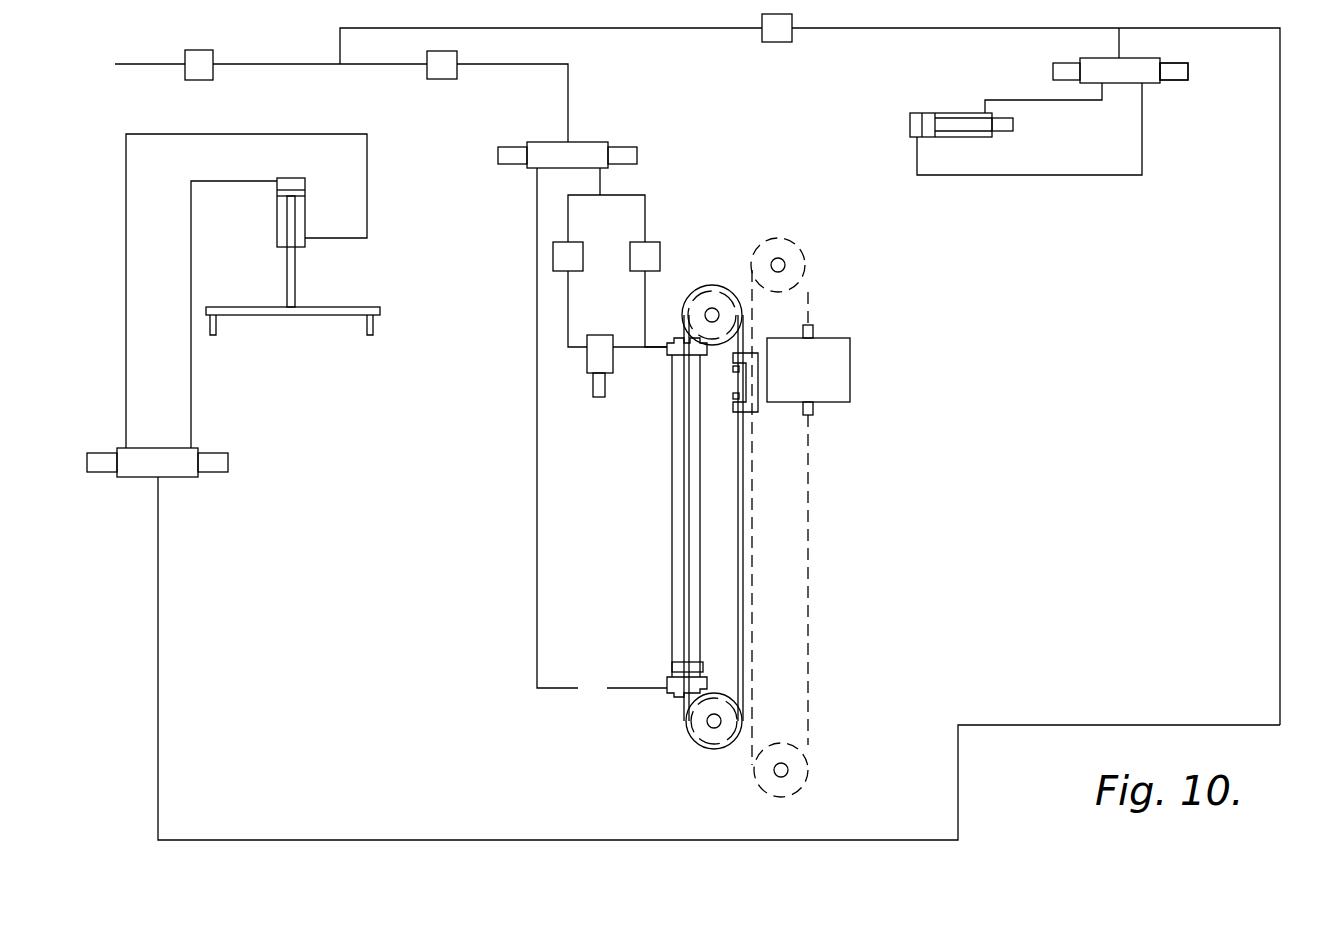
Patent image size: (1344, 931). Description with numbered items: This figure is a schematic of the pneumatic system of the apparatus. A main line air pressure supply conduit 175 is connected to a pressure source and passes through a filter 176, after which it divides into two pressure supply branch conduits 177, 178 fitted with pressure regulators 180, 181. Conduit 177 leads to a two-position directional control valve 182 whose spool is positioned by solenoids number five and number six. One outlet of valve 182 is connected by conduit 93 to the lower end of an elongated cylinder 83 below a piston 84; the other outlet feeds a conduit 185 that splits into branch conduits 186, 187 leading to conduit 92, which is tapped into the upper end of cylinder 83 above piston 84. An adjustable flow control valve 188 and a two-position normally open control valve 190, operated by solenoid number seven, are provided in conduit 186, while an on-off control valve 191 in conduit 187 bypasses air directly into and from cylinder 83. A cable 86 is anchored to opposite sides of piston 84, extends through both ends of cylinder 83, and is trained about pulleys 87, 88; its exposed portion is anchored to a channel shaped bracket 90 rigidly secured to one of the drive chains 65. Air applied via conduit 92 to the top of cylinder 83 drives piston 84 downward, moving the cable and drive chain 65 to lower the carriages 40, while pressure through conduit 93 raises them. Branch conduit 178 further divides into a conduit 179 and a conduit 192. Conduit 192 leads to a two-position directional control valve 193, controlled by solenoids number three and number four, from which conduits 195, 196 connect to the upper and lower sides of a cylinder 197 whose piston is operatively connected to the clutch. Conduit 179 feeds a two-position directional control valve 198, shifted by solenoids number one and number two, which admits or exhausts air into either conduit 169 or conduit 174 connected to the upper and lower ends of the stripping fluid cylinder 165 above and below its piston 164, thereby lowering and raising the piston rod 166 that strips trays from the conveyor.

The carriage 40 is at (850, 378).
The drive chain 65 is at (810, 462).
The cylinder 83 is at (672, 530).
The piston 84 is at (676, 666).
The cable 86 is at (683, 484).
The pulley 87 is at (736, 318).
The pulley 88 is at (705, 745).
The channel shaped bracket 90 is at (746, 416).
The conduit 92 is at (666, 344).
The conduit 93 is at (534, 578).
The piston 164 is at (277, 191).
The fluid cylinder 165 is at (277, 232).
The piston rod 166 is at (295, 275).
The conduit 169 is at (193, 365).
The conduit 174 is at (368, 218).
The main line air pressure supply conduit 175 is at (136, 62).
The filter 176 is at (205, 79).
The pressure supply branch conduit 177 is at (296, 70).
The pressure supply branch conduit 178 is at (626, 30).
The conduit 179 is at (232, 846).
The pressure regulator 180 is at (445, 80).
The pressure regulator 181 is at (772, 42).
The two-position directional control valve 182 is at (592, 140).
The conduit 185 is at (604, 181).
The branch conduit 186 is at (569, 213).
The branch conduit 187 is at (647, 204).
The adjustable flow control valve 188 is at (584, 264).
The two-position normally open control valve 190 is at (613, 360).
The on-off control valve 191 is at (660, 258).
The conduit 192 is at (1116, 44).
The two-position directional control valve 193 is at (1150, 84).
The conduit 195 is at (994, 98).
The conduit 196 is at (1062, 178).
The cylinder 197 is at (958, 140).
The two-position directional control valve 198 is at (180, 478).